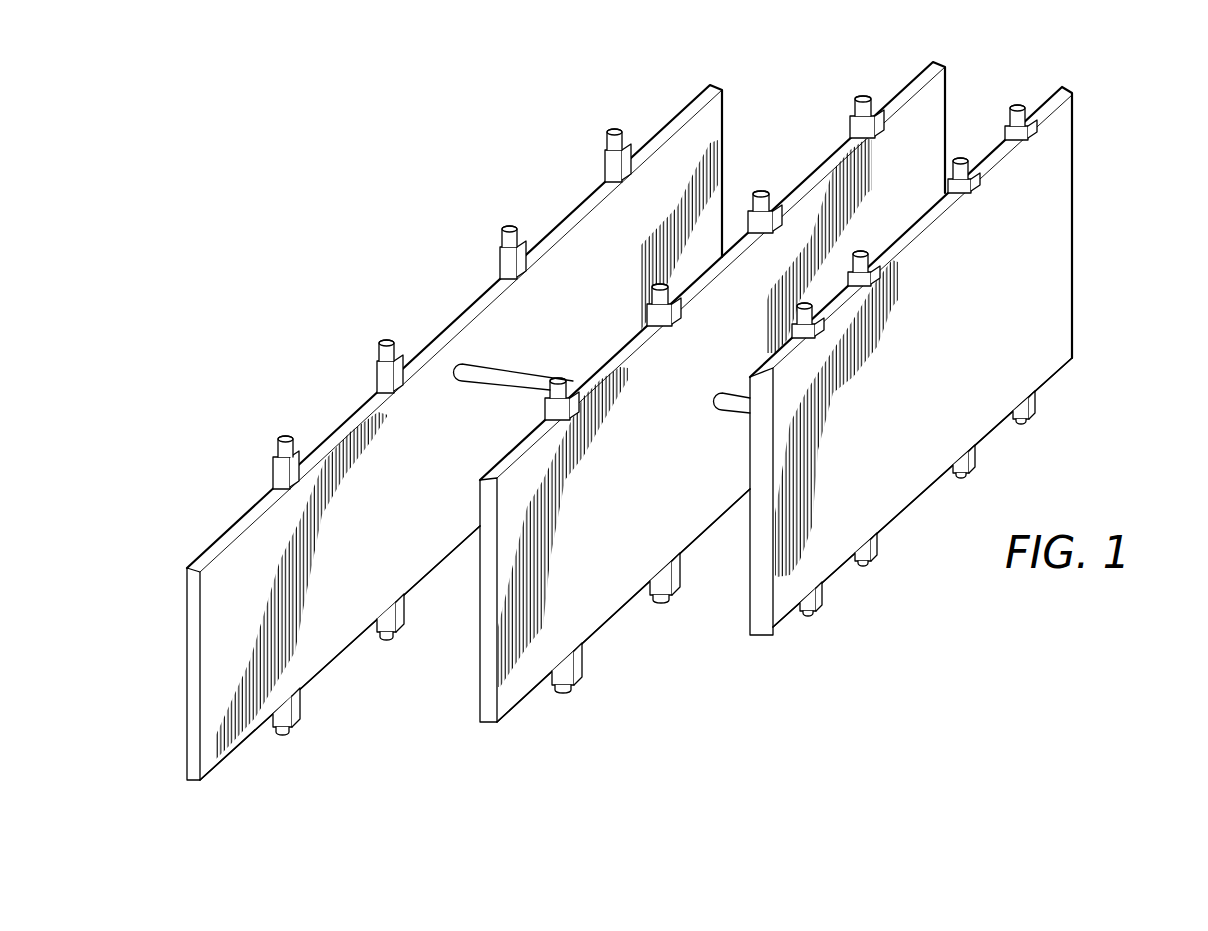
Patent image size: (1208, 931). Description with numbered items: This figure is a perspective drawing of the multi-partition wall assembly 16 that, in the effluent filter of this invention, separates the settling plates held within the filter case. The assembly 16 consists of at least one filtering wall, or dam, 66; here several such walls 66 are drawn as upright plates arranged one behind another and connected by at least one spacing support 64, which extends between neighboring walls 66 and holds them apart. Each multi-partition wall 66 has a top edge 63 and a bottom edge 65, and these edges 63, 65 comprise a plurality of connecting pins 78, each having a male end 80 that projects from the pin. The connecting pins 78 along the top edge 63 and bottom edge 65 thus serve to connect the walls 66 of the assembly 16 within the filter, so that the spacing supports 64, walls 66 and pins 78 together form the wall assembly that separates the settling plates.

The multi-partition wall assembly 16 is at (661, 400).
The top edge 63 is at (685, 108).
The spacing support 64 is at (487, 365).
The bottom edge 65 is at (313, 680).
The filtering wall 66 is at (230, 628).
The connecting pin 78 is at (273, 433).
The male end 80 is at (285, 436).